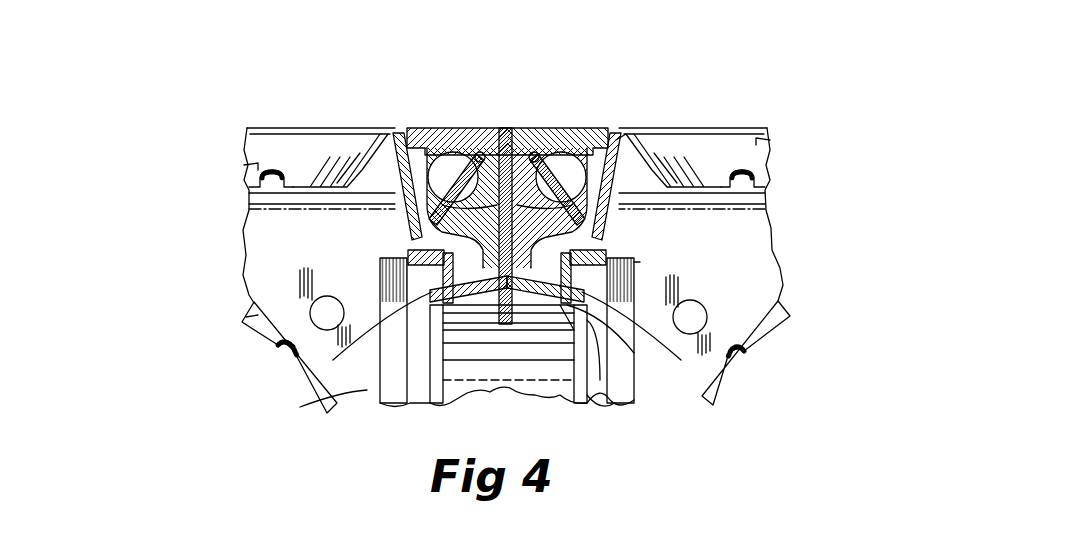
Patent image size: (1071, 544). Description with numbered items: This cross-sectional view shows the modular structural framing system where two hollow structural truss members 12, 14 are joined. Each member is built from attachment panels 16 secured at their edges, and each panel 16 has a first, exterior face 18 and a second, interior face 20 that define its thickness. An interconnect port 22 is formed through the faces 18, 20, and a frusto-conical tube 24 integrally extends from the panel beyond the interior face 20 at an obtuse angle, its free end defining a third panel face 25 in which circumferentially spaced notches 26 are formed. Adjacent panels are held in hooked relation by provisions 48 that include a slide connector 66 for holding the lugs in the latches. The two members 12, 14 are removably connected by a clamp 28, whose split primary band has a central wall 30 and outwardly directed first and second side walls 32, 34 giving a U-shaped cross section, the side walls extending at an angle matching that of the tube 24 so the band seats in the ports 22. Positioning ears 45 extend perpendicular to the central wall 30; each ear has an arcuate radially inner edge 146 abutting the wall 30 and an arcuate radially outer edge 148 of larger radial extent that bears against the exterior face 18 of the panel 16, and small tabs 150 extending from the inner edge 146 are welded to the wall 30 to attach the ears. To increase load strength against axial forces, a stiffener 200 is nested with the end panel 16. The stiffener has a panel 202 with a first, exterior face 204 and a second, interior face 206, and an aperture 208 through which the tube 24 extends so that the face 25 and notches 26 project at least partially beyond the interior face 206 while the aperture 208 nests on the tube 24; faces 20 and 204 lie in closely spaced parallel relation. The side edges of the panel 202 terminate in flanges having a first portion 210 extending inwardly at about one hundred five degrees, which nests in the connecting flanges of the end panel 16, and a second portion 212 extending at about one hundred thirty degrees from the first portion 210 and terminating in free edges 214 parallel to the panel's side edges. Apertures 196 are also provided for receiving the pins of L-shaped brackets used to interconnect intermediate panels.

The first structural truss member 12 is at (240, 128).
The second structural truss member 14 is at (770, 125).
The attachment panel 16 is at (385, 126).
The first, exterior face 18 is at (380, 130).
The second, interior face 20 is at (372, 152).
The interconnect port 22 is at (277, 135).
The tube 24 is at (262, 165).
The third panel face 25 is at (250, 207).
The notches 26 is at (282, 192).
The clamp 28 is at (372, 405).
The central wall 30 is at (540, 312).
The first side wall 32 is at (508, 324).
The second side wall 34 is at (590, 400).
The positioning ears 45 is at (490, 235).
The provisions 48 is at (458, 124).
The connector 66 is at (445, 160).
The radially inner edge 146 is at (498, 312).
The radially outer edge 148 is at (497, 200).
The small tabs 150 is at (506, 312).
The apertures 196 is at (310, 308).
The stiffener 200 is at (345, 405).
The panel 202 is at (676, 289).
The first, exterior face 204 is at (570, 302).
The second, interior face 206 is at (314, 306).
The aperture 208 is at (595, 378).
The first portion 210 is at (382, 262).
The second portion 212 is at (388, 208).
The free edges 214 is at (633, 140).